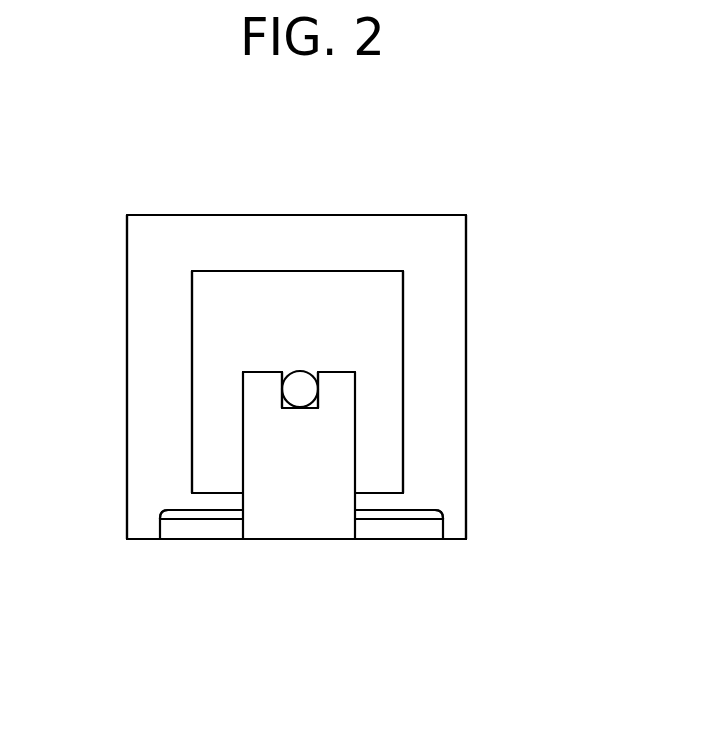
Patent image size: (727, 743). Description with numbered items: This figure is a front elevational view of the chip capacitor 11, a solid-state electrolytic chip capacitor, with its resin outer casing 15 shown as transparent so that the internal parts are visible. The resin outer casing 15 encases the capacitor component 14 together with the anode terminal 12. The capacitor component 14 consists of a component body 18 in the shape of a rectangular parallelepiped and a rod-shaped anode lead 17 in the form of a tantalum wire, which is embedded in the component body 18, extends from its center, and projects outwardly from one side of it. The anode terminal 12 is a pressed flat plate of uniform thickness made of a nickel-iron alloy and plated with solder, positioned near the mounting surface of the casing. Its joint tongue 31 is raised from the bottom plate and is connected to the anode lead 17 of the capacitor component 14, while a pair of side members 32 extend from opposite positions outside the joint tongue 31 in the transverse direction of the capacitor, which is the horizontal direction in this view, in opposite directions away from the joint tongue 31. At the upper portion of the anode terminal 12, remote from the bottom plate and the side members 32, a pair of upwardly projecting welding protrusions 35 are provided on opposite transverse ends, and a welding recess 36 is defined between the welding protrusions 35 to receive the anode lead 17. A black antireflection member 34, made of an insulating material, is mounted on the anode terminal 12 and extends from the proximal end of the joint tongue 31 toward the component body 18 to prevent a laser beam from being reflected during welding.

The chip capacitor 11 is at (488, 201).
The anode terminal 12 is at (289, 543).
The capacitor component 14 is at (345, 149).
The resin outer casing 15 is at (172, 214).
The anode lead 17 is at (263, 371).
The component body 18 is at (333, 269).
The joint tongue 31 is at (262, 432).
The side members 32 is at (203, 530).
The antireflection member 34 is at (175, 510).
The welding protrusions 35 is at (262, 395).
The welding recess 36 is at (316, 397).